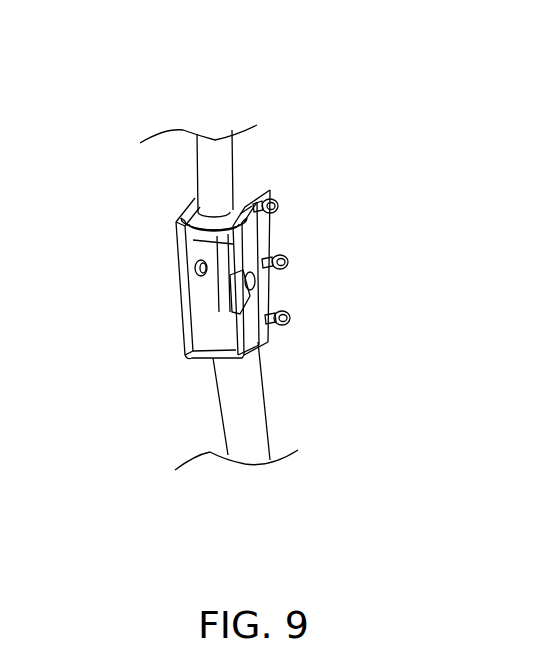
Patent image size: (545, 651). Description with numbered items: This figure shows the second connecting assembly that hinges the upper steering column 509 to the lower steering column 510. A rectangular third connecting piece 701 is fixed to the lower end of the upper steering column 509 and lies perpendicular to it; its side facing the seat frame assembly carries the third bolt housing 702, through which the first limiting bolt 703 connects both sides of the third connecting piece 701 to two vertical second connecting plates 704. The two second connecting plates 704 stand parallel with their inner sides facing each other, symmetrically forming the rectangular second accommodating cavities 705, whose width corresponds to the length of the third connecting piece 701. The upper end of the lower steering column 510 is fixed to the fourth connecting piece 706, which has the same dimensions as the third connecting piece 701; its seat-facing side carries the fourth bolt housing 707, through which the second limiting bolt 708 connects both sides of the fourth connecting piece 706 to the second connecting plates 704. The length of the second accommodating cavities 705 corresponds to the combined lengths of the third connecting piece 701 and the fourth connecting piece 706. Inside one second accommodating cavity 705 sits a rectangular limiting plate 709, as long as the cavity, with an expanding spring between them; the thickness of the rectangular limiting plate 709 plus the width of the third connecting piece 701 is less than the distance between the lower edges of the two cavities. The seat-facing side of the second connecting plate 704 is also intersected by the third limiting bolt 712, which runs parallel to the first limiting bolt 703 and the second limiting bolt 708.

The upper steering column 509 is at (210, 163).
The lower steering column 510 is at (243, 422).
The third connecting piece 701 is at (183, 220).
The third bolt housing 702 is at (240, 205).
The first limiting bolt 703 is at (279, 204).
The second connecting plate 704 is at (187, 297).
The second accommodating cavity 705 is at (193, 247).
The fourth connecting piece 706 is at (192, 356).
The fourth bolt housing 707 is at (267, 311).
The second limiting bolt 708 is at (260, 333).
The rectangular limiting plate 709 is at (247, 252).
The third limiting bolt 712 is at (240, 280).